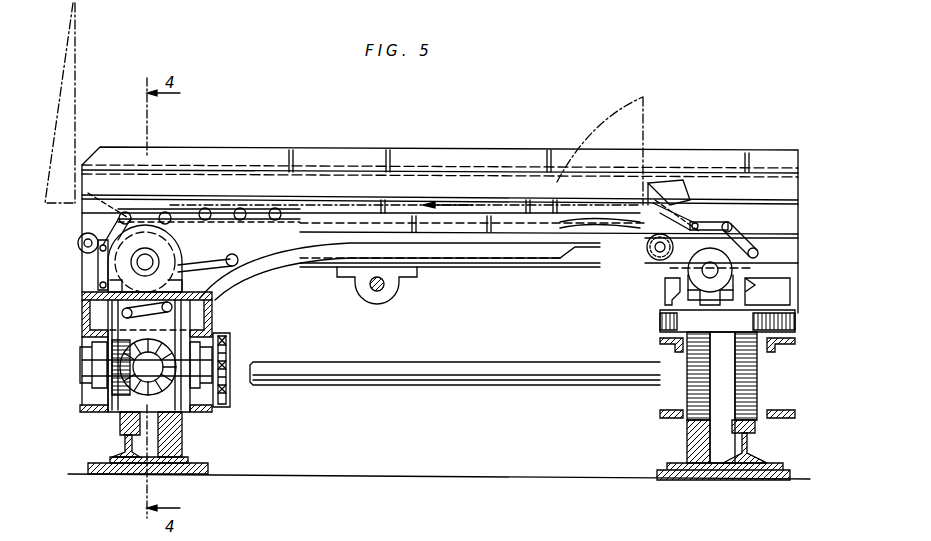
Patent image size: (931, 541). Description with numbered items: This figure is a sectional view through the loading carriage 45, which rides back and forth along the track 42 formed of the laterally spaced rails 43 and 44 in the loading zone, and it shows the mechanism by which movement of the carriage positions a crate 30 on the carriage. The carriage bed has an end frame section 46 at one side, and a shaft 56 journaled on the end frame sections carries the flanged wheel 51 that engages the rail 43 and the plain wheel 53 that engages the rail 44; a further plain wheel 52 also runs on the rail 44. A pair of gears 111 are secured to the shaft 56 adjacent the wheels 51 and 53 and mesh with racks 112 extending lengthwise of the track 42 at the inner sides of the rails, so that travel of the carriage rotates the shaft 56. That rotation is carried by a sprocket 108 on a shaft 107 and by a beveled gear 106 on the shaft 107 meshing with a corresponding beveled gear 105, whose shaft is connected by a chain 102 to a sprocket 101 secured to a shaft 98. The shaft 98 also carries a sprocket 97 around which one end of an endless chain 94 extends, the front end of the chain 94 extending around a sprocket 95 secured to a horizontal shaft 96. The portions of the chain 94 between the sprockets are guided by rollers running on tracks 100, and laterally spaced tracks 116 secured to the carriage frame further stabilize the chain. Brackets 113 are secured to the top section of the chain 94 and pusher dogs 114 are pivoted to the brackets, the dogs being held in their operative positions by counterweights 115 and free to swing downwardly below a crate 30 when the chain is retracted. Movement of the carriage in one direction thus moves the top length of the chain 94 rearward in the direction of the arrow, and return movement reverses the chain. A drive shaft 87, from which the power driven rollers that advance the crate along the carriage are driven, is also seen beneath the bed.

The crate 30 is at (75, 136).
The loading carriage 45 is at (440, 146).
The pusher dogs 114 is at (104, 195).
The sprocket 97 is at (175, 210).
The sprocket 101 is at (78, 243).
The shaft 98 is at (152, 262).
The endless chain 94 is at (97, 268).
The chain 102 is at (84, 318).
The beveled gear 105 is at (150, 355).
The gears 111 is at (208, 320).
The shaft 107 is at (232, 346).
The end frame section 46 is at (86, 335).
The beveled gear 106 is at (100, 393).
The sprocket 108 is at (230, 398).
The flanged wheel 51 is at (113, 416).
The track 42 is at (120, 444).
The rail 43 is at (128, 463).
The racks 112 is at (170, 460).
The drive shaft 87 is at (384, 287).
The tracks 100 is at (537, 250).
The tracks 116 is at (578, 248).
The shaft 56 is at (558, 380).
The brackets 113 is at (675, 212).
The counterweights 115 is at (646, 247).
The shaft 96 is at (710, 268).
The sprocket 95 is at (758, 270).
The plain wheel 52 is at (770, 408).
The plain wheel 53 is at (758, 418).
The rail 44 is at (750, 442).